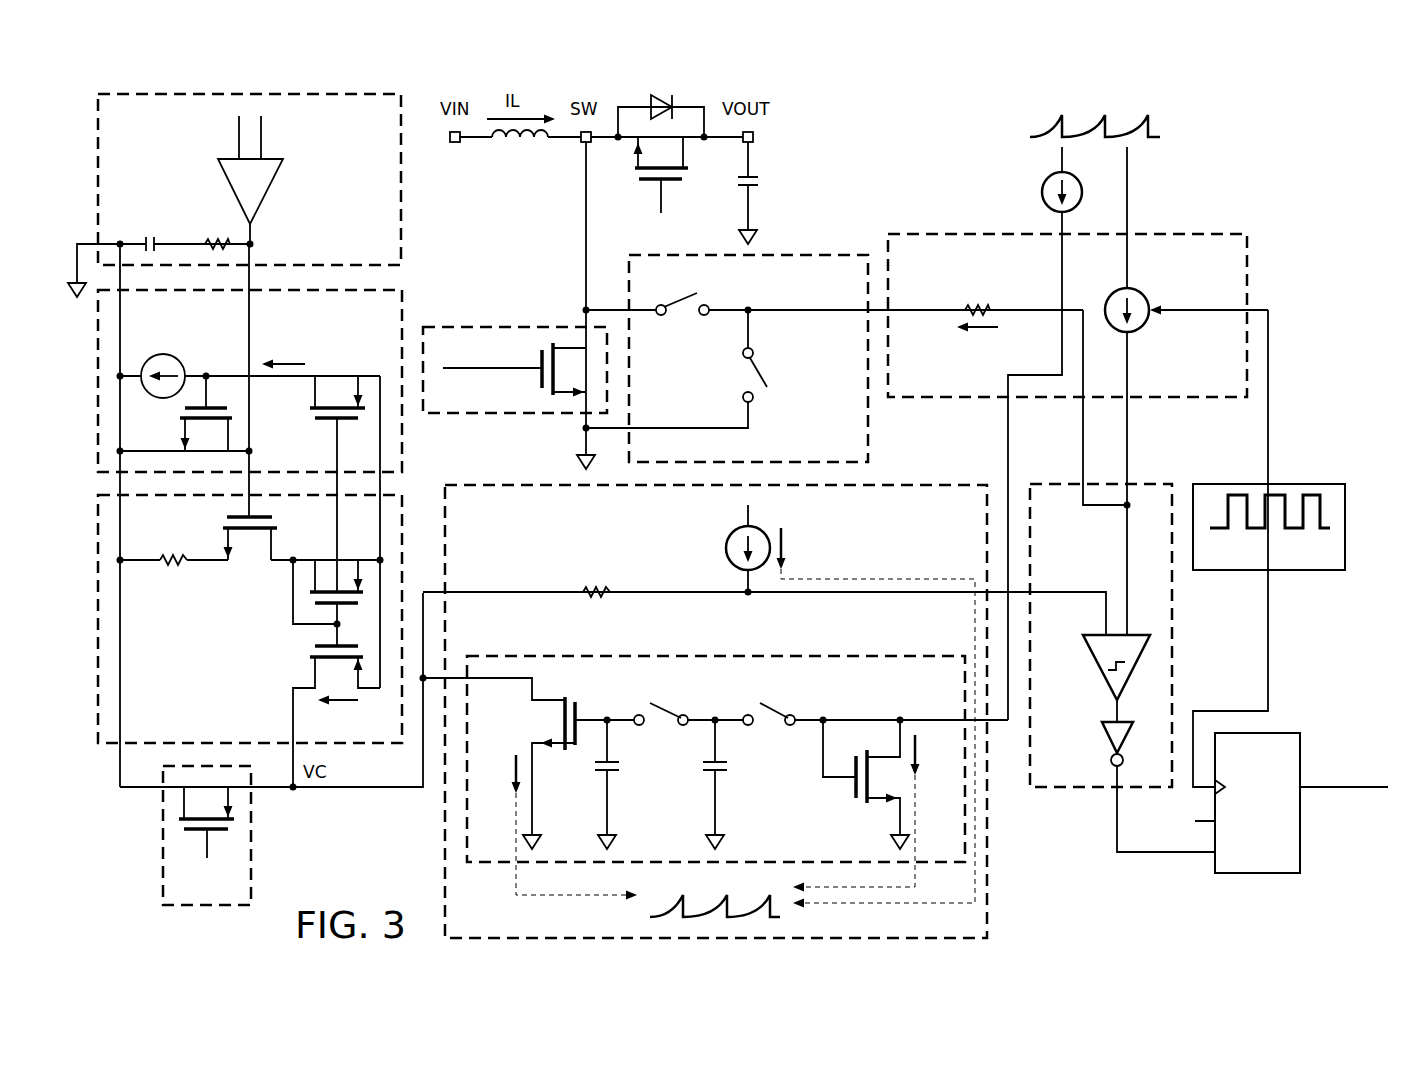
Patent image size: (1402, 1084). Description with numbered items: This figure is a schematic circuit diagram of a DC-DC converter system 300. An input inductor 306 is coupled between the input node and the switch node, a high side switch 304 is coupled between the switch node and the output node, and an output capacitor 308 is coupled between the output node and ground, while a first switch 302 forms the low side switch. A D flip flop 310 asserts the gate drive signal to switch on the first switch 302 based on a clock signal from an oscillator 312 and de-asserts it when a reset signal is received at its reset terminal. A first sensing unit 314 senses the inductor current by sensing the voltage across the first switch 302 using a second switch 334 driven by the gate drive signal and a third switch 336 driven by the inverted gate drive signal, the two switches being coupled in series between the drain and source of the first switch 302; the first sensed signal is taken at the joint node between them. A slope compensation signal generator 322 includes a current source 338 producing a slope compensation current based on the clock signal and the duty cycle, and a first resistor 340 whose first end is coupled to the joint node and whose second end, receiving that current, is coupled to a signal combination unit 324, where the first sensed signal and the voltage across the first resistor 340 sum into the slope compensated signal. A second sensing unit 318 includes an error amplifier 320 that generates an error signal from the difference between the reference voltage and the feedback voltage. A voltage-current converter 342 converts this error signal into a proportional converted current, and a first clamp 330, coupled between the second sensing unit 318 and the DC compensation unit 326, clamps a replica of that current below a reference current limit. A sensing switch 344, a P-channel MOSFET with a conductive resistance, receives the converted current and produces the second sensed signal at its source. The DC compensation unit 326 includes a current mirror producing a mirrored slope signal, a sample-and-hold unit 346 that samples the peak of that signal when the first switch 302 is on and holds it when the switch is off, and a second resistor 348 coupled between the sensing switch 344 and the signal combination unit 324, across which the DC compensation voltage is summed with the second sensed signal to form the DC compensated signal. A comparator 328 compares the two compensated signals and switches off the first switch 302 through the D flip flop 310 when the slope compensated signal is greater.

The DC-DC converter system 300 is at (1270, 114).
The first switch 302 is at (500, 326).
The high side switch HSD FET 304 is at (655, 185).
The input inductor 306 is at (518, 148).
The output capacitor 308 is at (757, 190).
The D flip flop 310 is at (1255, 873).
The oscillator 312 is at (1290, 484).
The first sensing unit 314 is at (838, 252).
The second sensing unit 318 is at (93, 178).
The error amplifier 320 is at (230, 195).
The slope compensation signal generator 322 is at (1159, 231).
The signal combination unit 324 is at (1138, 479).
The DC compensation unit 326 is at (924, 479).
The comparator 328 is at (1101, 667).
The first clamp 330 is at (93, 368).
The second switch 334 is at (680, 312).
The third switch 336 is at (752, 372).
The current source 338 is at (1141, 328).
The first resistor 340 is at (970, 306).
The voltage-current converter 342 is at (93, 630).
The sensing switch 344 is at (163, 845).
The sample-and-hold unit 346 is at (808, 653).
The second resistor 348 is at (592, 586).